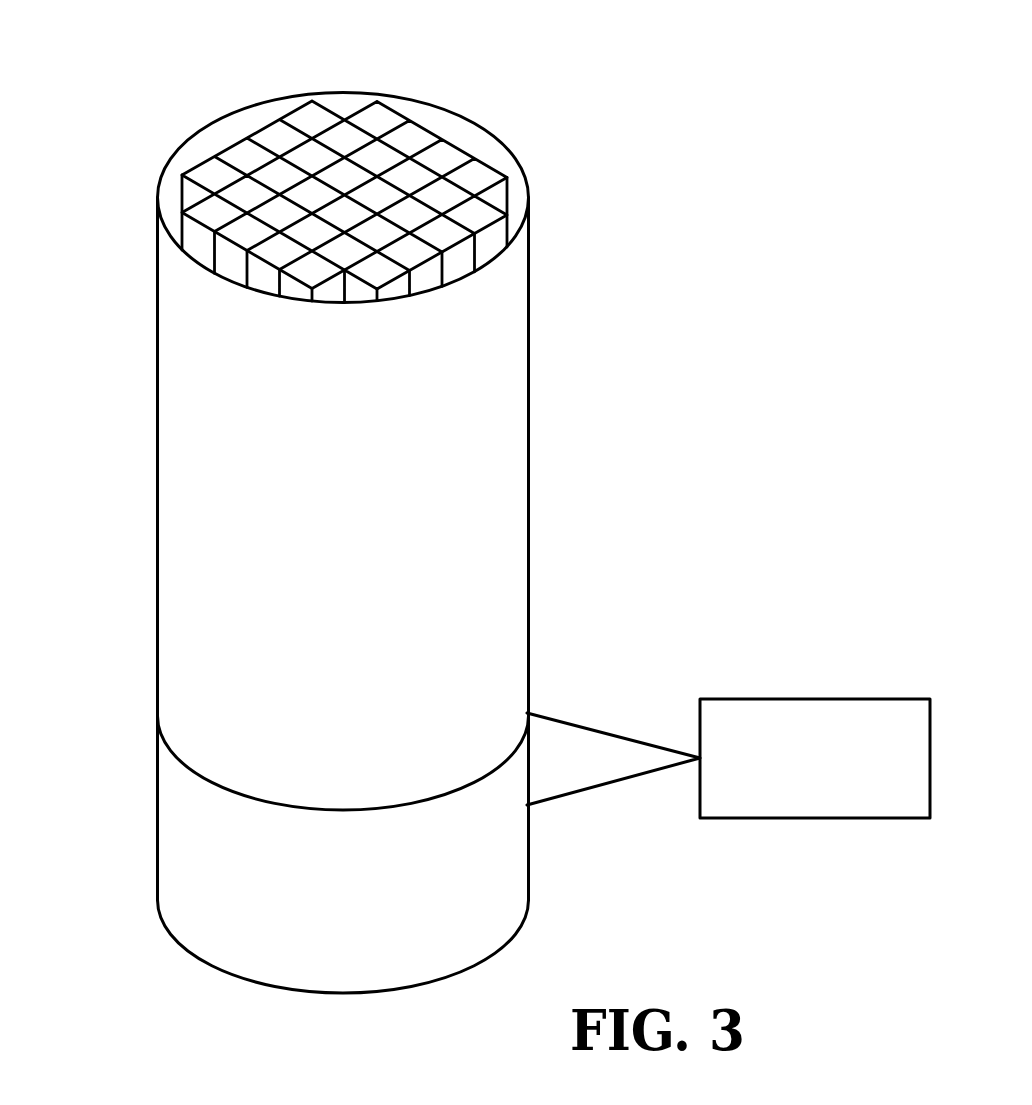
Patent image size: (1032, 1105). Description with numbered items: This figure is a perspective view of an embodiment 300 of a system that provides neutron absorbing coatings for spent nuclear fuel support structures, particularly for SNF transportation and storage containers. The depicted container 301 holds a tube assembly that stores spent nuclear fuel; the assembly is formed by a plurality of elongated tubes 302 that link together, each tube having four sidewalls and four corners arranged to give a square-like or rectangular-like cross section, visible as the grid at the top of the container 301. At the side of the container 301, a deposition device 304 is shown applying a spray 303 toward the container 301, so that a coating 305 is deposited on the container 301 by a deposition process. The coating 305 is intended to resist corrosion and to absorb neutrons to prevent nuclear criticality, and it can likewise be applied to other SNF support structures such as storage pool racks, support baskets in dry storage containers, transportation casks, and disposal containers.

The embodiment 300 is at (414, 67).
The container 301 is at (373, 475).
The elongated tubes 302 is at (250, 230).
The spray 303 is at (597, 730).
The deposition device 304 is at (822, 698).
The coating 305 is at (390, 900).